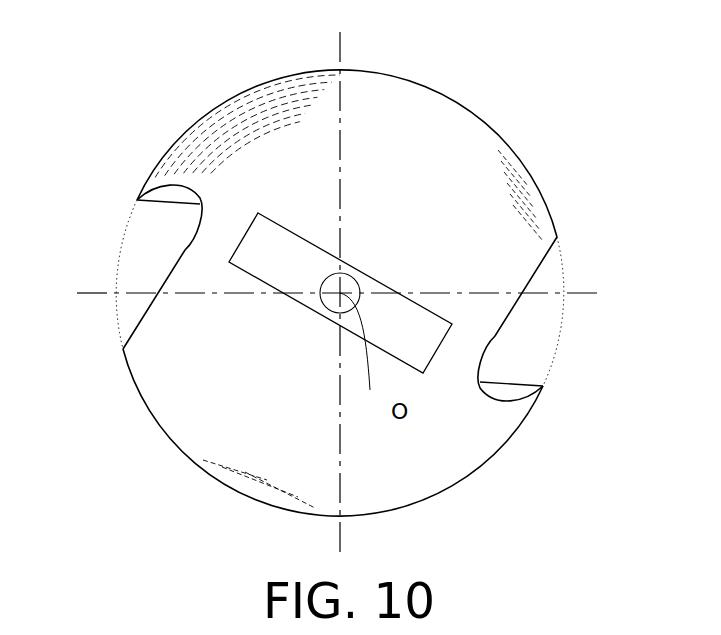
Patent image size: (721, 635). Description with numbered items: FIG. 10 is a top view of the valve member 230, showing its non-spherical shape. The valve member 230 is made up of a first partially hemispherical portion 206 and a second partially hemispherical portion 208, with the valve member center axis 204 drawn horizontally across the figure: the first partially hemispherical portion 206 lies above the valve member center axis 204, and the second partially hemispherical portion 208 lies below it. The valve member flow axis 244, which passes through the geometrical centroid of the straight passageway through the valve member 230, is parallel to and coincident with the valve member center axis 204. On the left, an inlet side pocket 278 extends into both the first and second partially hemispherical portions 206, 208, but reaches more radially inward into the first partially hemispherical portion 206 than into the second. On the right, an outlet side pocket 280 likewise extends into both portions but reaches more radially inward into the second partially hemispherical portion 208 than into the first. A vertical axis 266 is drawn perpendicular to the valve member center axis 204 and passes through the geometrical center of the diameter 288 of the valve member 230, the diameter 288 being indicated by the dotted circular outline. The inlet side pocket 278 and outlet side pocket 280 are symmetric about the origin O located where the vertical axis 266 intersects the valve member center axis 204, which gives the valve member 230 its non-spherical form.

The valve member center axis 204 is at (603, 292).
The first partially hemispherical portion 206 is at (467, 138).
The second partially hemispherical portion 208 is at (197, 410).
The valve member 230 is at (172, 85).
The valve member flow axis 244 is at (93, 290).
The vertical axis 266 is at (343, 45).
The inlet side pocket 278 is at (142, 234).
The outlet side pocket 280 is at (562, 268).
The diameter 288 is at (115, 302).